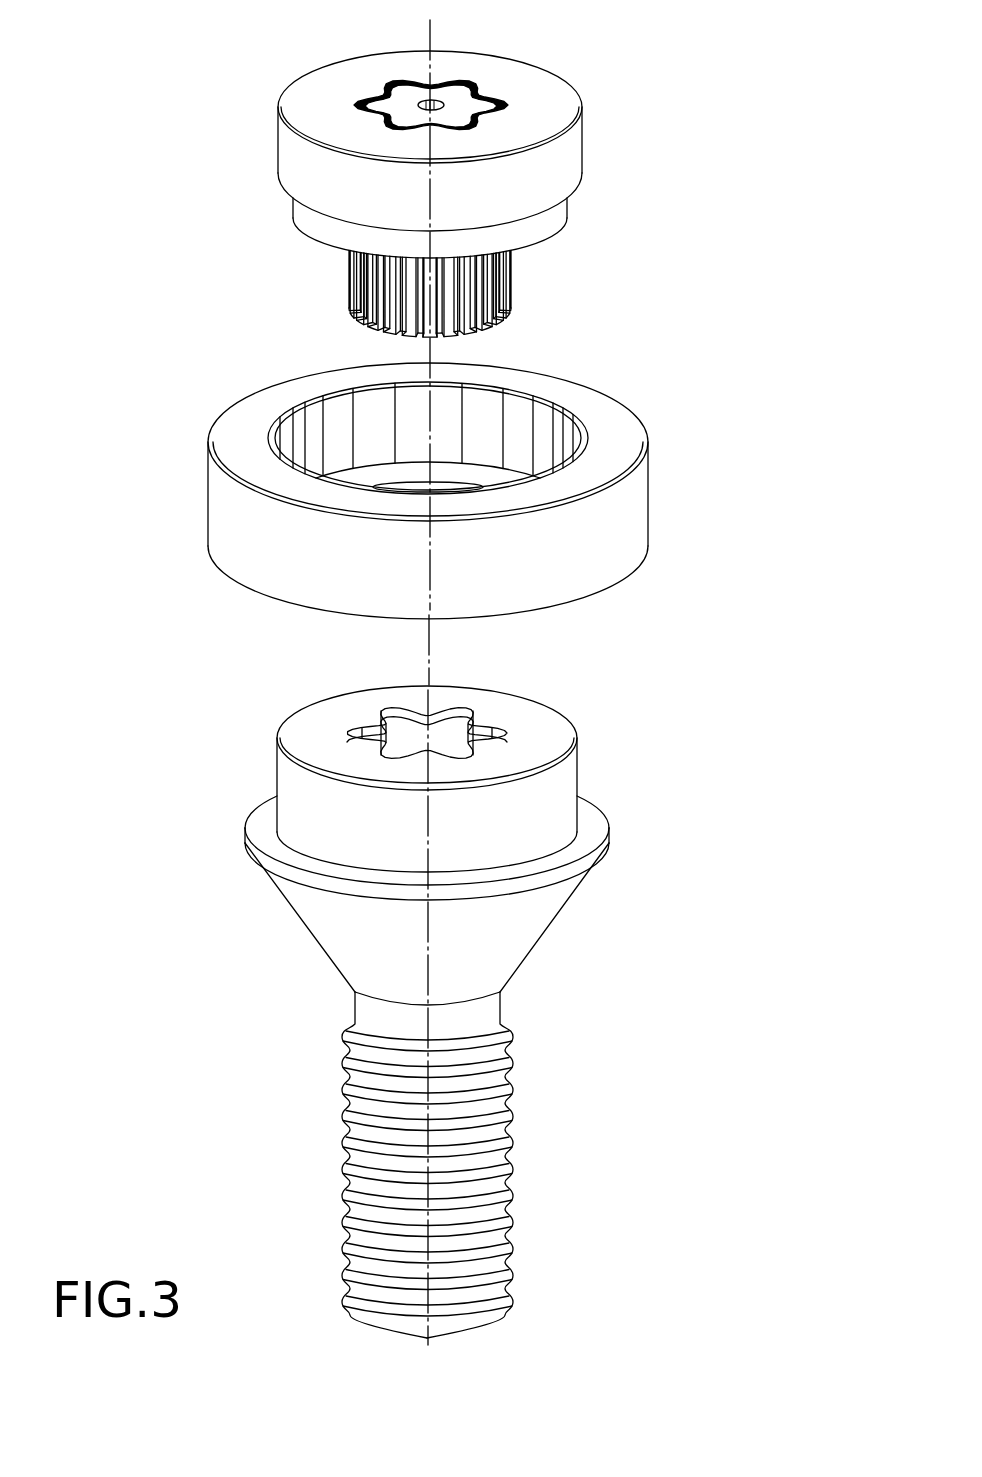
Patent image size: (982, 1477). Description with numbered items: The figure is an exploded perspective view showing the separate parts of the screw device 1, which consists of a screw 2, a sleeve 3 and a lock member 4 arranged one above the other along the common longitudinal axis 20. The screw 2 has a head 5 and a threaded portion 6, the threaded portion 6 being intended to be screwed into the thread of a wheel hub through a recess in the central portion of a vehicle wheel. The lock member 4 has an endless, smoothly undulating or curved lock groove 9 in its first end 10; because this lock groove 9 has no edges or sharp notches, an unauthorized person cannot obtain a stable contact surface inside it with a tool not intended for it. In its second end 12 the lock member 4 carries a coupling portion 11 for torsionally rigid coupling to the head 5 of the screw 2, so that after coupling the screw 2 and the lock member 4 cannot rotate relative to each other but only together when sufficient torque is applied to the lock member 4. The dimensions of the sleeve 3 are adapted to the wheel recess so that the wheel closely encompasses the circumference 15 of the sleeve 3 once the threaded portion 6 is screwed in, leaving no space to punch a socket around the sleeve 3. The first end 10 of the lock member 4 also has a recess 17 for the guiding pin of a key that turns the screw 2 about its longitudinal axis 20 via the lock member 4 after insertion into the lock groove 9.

The screw device 1 is at (147, 93).
The screw 2 is at (480, 1012).
The sleeve 3 is at (478, 491).
The lock member 4 is at (479, 131).
The head 5 is at (565, 793).
The threaded portion 6 is at (505, 1210).
The lock groove 9 is at (360, 97).
The first end 10 is at (543, 110).
The coupling portion 11 is at (351, 285).
The second end 12 is at (478, 328).
The circumference 15 is at (650, 436).
The recess 17 is at (437, 103).
The longitudinal axis 20 is at (428, 640).